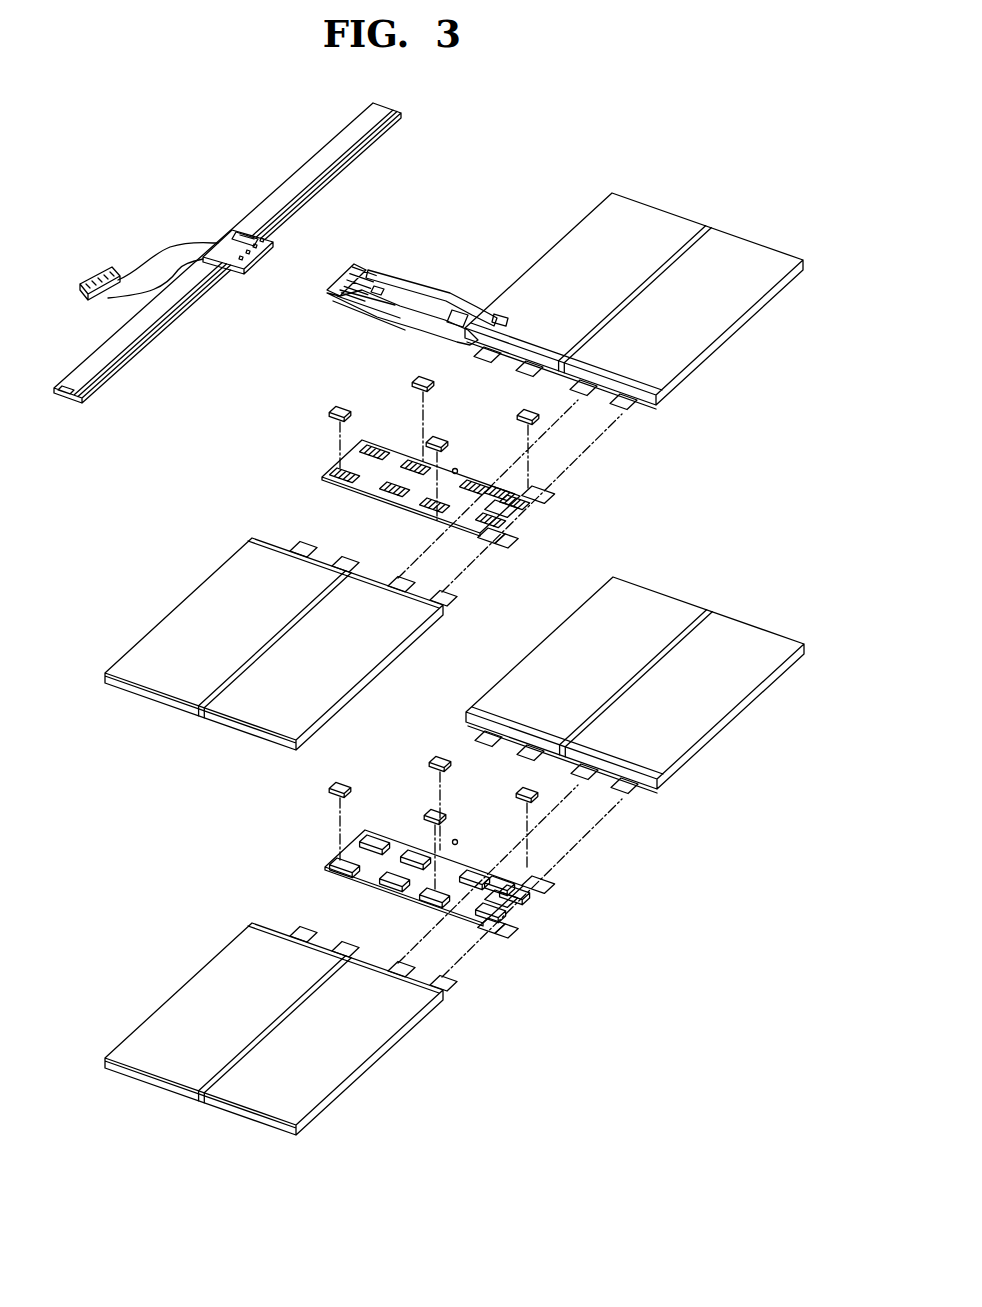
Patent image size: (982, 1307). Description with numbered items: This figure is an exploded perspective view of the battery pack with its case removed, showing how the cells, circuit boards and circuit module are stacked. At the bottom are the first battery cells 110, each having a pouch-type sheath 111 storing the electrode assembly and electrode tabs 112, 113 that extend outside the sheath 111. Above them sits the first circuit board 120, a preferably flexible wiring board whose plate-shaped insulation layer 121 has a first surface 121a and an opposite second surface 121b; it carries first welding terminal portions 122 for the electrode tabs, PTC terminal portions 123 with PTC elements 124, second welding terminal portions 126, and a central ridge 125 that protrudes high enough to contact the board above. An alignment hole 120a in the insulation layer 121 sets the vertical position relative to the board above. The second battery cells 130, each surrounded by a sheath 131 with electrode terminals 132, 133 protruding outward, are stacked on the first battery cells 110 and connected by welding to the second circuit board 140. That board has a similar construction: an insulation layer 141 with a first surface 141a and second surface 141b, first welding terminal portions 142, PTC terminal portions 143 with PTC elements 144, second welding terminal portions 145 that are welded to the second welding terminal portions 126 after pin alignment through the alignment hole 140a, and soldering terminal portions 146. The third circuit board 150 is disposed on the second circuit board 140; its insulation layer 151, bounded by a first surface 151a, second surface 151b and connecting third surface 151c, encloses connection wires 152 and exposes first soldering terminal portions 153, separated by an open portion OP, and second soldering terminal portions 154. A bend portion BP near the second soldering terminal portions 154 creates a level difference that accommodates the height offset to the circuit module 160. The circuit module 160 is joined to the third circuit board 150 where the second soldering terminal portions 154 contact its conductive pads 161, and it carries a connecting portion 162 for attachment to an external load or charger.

The first battery cell 110 is at (469, 862).
The sheath 111 is at (692, 729).
The electrode tab 112 is at (627, 796).
The electrode tab 113 is at (580, 781).
The first circuit board 120 is at (451, 877).
The alignment hole 120a is at (456, 840).
The insulation layer 121 is at (506, 958).
The first surface 121a is at (520, 945).
The second surface 121b is at (492, 931).
The first welding terminal portion 122 is at (352, 861).
The PTC terminal portion 123 is at (546, 877).
The PTC element 124 is at (328, 798).
The ridge 125 is at (508, 901).
The second welding terminal portion 126 is at (471, 876).
The second battery cell 130 is at (466, 474).
The sheath 131 is at (683, 351).
The electrode terminal 132 is at (626, 414).
The electrode terminal 133 is at (579, 398).
The second circuit board 140 is at (436, 496).
The alignment hole 140a is at (456, 469).
The insulation layer 141 is at (507, 572).
The first surface 141a is at (520, 559).
The second surface 141b is at (501, 549).
The first welding terminal portion 142 is at (345, 471).
The PTC terminal portion 143 is at (546, 496).
The PTC element 144 is at (328, 410).
The second welding terminal portion 145 is at (520, 509).
The soldering terminal portion 146 is at (441, 462).
The third circuit board 150 is at (376, 304).
The insulation layer 151 is at (361, 338).
The first surface 151a is at (333, 296).
The second surface 151b is at (350, 293).
The third surface 151c is at (369, 327).
The connection wire 152 is at (420, 287).
The first soldering terminal portion 153 is at (498, 314).
The second soldering terminal portion 154 is at (353, 268).
The bend portion BP is at (378, 289).
The open portion OP is at (458, 328).
The circuit module 160 is at (333, 160).
The conductive pad 161 is at (252, 228).
The connecting portion 162 is at (170, 268).